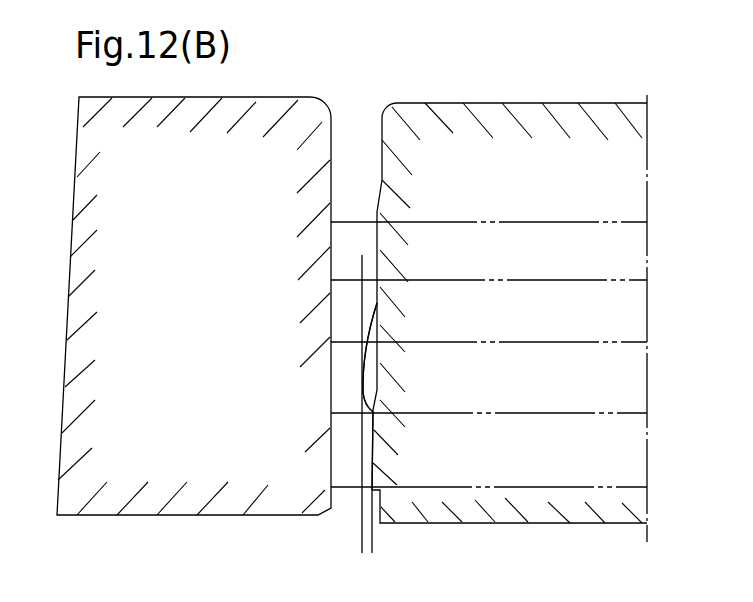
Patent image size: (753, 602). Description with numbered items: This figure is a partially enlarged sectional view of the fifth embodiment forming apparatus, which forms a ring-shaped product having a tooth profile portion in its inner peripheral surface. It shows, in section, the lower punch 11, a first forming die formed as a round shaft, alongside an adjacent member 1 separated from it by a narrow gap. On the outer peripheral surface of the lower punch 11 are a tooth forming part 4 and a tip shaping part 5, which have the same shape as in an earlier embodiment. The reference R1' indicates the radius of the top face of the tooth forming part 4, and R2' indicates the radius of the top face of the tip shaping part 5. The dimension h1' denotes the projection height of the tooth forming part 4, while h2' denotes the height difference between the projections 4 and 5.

The first member (left body) 1 is at (88, 216).
The lower punch 11 is at (557, 137).
The tooth forming part 4 is at (363, 363).
The tip shaping part 5 is at (376, 453).
The projection height of the tooth forming part h1' is at (372, 359).
The height difference between projections h2' is at (372, 539).
The radius of the top face of the tooth forming part R1' is at (475, 350).
The radius of the top face of the tip shaping part R2' is at (472, 425).